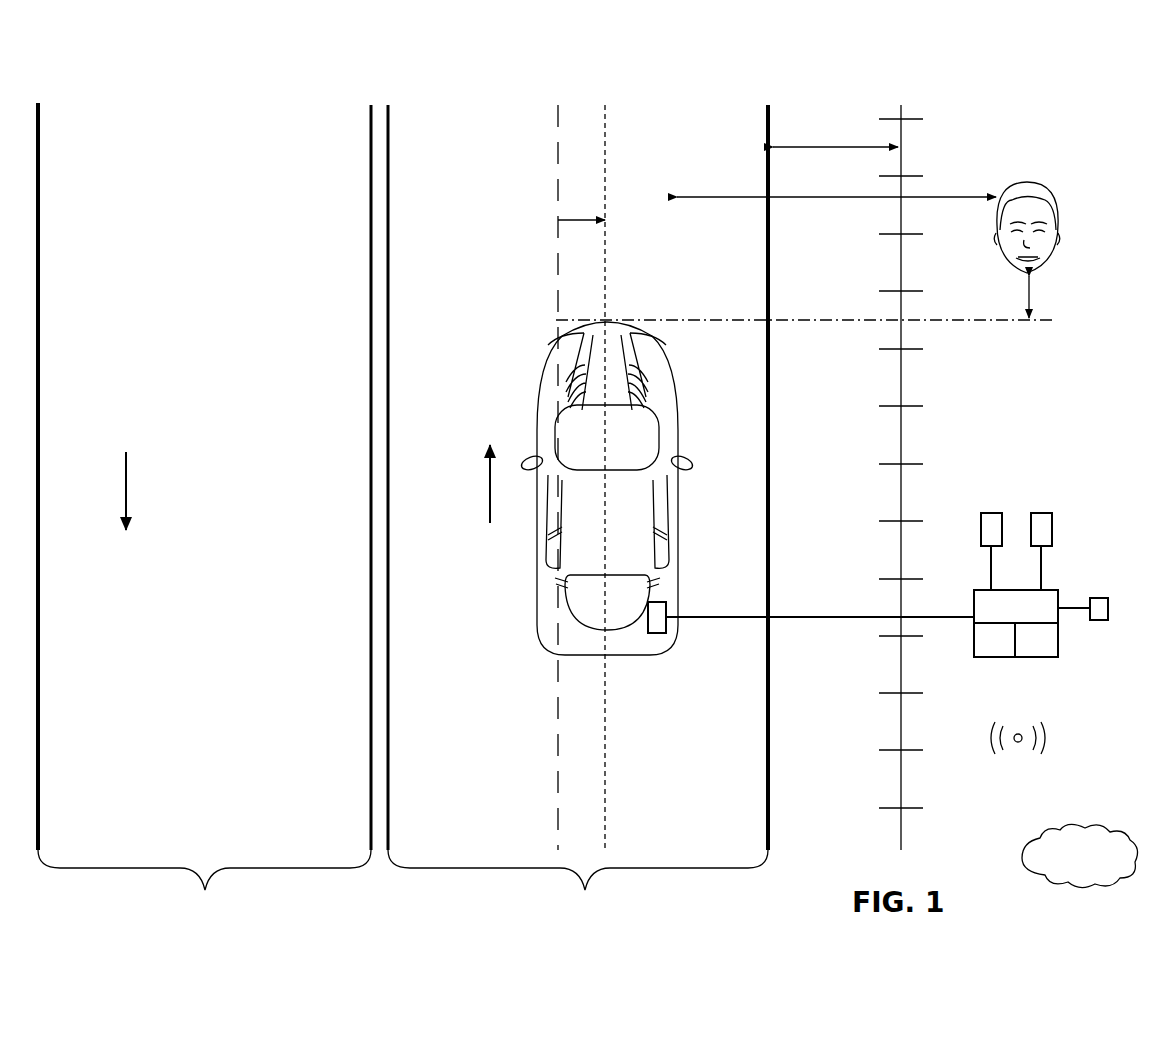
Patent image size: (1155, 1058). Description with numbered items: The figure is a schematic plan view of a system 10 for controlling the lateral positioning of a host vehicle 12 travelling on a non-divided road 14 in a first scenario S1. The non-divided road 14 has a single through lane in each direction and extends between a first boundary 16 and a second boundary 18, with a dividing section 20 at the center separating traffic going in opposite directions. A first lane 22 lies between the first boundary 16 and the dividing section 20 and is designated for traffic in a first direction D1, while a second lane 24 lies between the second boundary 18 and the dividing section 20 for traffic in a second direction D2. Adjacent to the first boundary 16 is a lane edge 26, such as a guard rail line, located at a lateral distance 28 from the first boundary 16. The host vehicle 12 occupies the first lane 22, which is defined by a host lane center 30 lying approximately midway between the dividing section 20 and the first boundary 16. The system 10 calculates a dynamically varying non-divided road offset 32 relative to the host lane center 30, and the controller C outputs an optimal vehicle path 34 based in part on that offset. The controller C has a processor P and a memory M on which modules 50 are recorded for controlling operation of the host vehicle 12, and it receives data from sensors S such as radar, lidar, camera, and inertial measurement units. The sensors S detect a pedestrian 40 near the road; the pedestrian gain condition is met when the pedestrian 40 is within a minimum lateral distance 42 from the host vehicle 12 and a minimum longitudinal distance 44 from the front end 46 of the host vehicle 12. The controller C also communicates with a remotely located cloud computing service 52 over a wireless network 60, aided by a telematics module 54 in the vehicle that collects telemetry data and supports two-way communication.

The system 10 is at (914, 61).
The host vehicle 12 is at (533, 579).
The non-divided road 14 is at (524, 60).
The first boundary 16 is at (770, 795).
The second boundary 18 is at (40, 683).
The dividing section 20 is at (394, 133).
The first lane 22 is at (650, 870).
The second lane 24 is at (270, 870).
The lane edge 26 is at (898, 662).
The lateral distance 28 is at (850, 150).
The host lane center 30 is at (557, 748).
The non-divided road offset 32 is at (582, 218).
The optimal vehicle path 34 is at (607, 757).
The pedestrian 40 is at (1049, 168).
The lateral distance 42 is at (856, 200).
The longitudinal distance 44 is at (1042, 290).
The front end 46 is at (852, 325).
The modules 50 is at (1041, 513).
The cloud computing service 52 is at (1071, 813).
The telematics module 54 is at (991, 513).
The wireless network 60 is at (1046, 714).
The controller C is at (1016, 624).
The sensors S is at (1097, 598).
The first direction D1 is at (488, 505).
The second direction D2 is at (124, 470).
The first scenario S1 is at (694, 61).